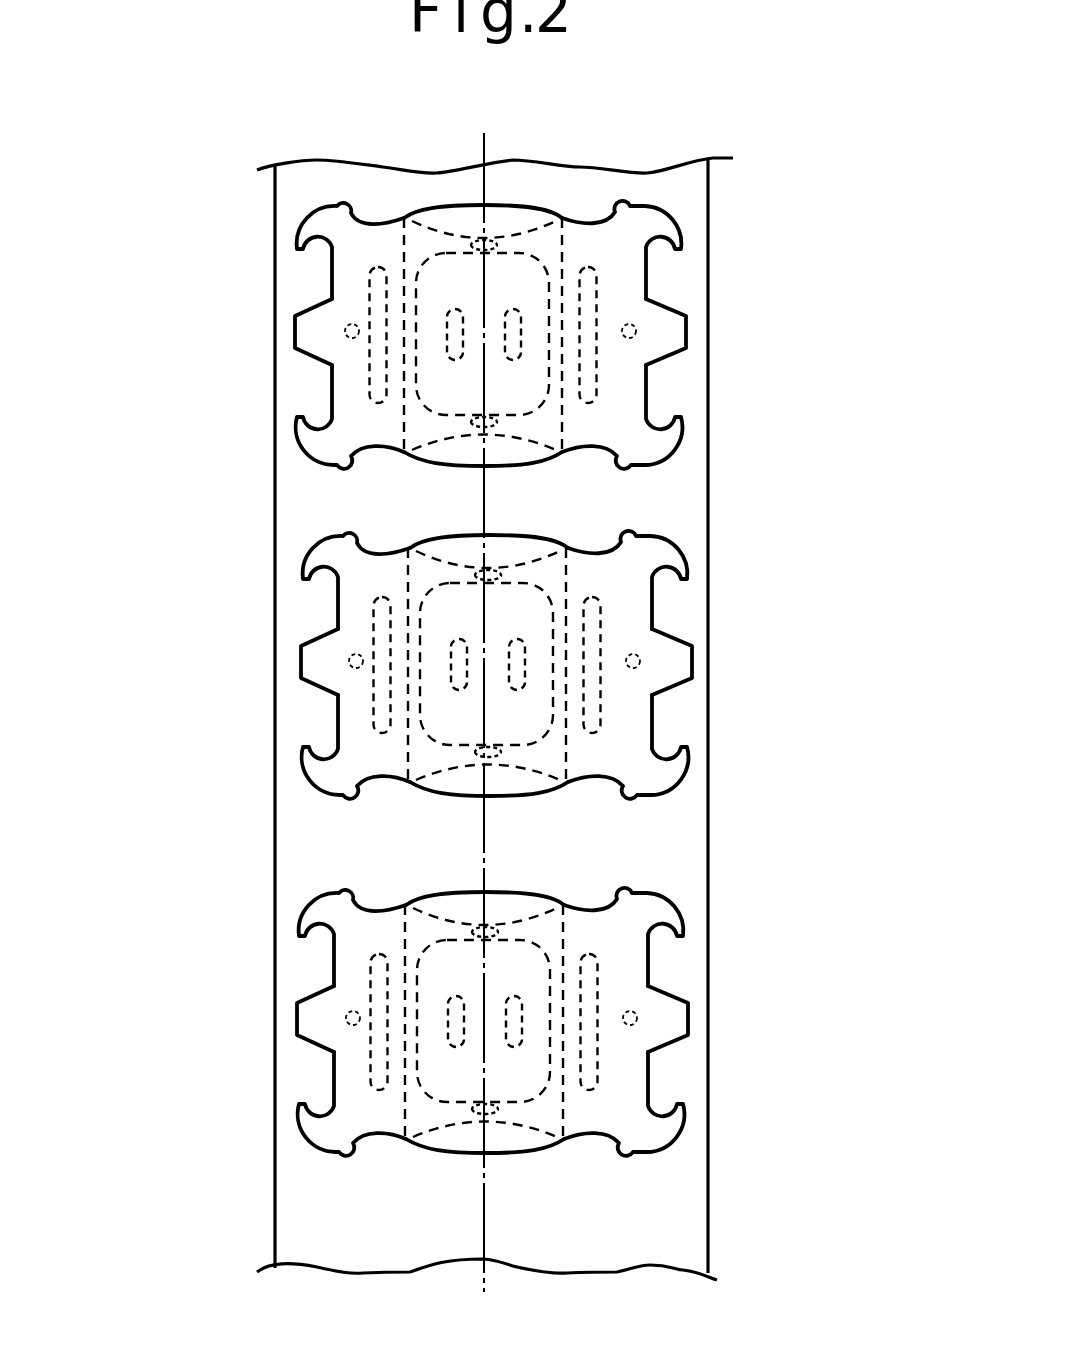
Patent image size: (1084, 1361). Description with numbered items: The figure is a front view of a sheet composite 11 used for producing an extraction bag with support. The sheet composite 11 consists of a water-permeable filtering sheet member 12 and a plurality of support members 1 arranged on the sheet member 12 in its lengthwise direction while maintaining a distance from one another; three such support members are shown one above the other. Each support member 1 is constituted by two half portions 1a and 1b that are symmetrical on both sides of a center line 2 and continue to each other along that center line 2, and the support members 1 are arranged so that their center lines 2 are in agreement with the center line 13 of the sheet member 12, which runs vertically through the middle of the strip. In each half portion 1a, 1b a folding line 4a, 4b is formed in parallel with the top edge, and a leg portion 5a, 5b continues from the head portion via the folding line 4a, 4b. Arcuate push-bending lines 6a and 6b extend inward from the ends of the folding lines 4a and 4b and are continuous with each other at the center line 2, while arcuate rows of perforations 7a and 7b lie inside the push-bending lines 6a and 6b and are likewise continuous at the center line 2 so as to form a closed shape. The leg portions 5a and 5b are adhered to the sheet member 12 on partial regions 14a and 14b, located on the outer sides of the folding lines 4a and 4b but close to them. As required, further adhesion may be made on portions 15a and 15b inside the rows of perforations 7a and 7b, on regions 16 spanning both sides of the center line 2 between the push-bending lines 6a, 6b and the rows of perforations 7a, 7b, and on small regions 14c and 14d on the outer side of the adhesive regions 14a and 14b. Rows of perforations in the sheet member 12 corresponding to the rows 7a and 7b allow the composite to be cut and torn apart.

The support member 1 is at (492, 631).
The half portion 1a is at (350, 632).
The half portion 1b is at (629, 631).
The center line 2 is at (488, 290).
The folding line 4a is at (400, 238).
The folding line 4b is at (560, 250).
The leg portion 5a is at (347, 377).
The leg portion 5b is at (645, 372).
The arcuate push-bending line 6a is at (434, 218).
The arcuate push-bending line 6b is at (507, 232).
The arcuate row of perforations 7a is at (338, 437).
The arcuate row of perforations 7b is at (540, 397).
The sheet composite 11 is at (742, 135).
The water-permeable filtering sheet member 12 is at (692, 222).
The center line of the sheet member 13 is at (480, 133).
The adhesive region 14a is at (372, 273).
The adhesive region 14b is at (597, 316).
The small adhesive region 14c is at (447, 325).
The small adhesive region 14d is at (522, 342).
The adhesive portion 15a is at (345, 328).
The adhesive portion 15b is at (622, 362).
The adhesive region spanning the center line 16 is at (473, 240).